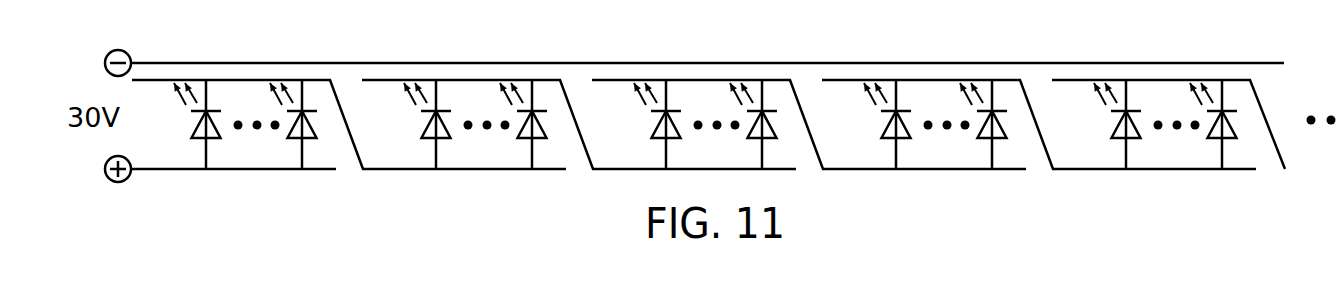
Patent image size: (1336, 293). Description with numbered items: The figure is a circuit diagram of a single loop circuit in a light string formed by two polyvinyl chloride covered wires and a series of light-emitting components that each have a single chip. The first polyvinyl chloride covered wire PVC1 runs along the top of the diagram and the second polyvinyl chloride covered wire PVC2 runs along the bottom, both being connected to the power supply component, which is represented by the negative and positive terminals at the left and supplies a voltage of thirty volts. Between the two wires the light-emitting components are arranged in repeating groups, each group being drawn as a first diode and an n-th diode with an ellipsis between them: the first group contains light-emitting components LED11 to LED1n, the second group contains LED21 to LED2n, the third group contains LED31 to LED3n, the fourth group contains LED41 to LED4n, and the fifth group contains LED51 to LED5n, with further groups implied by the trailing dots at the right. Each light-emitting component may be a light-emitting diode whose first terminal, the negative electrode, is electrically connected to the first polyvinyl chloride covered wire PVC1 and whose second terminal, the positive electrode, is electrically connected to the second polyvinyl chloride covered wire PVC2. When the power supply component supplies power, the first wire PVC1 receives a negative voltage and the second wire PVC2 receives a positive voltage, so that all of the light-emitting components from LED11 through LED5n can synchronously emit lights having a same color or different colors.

The first polyvinyl chloride covered wire PVC1 is at (155, 63).
The second polyvinyl chloride covered wire PVC2 is at (273, 170).
The light-emitting component LED11 is at (227, 98).
The light-emitting component LED1n is at (332, 98).
The light-emitting component LED21 is at (457, 98).
The light-emitting component LED2n is at (562, 98).
The light-emitting component LED31 is at (687, 98).
The light-emitting component LED3n is at (792, 98).
The light-emitting component LED41 is at (917, 98).
The light-emitting component LED4n is at (1022, 98).
The light-emitting component LED51 is at (1147, 98).
The light-emitting component LED5n is at (1252, 98).